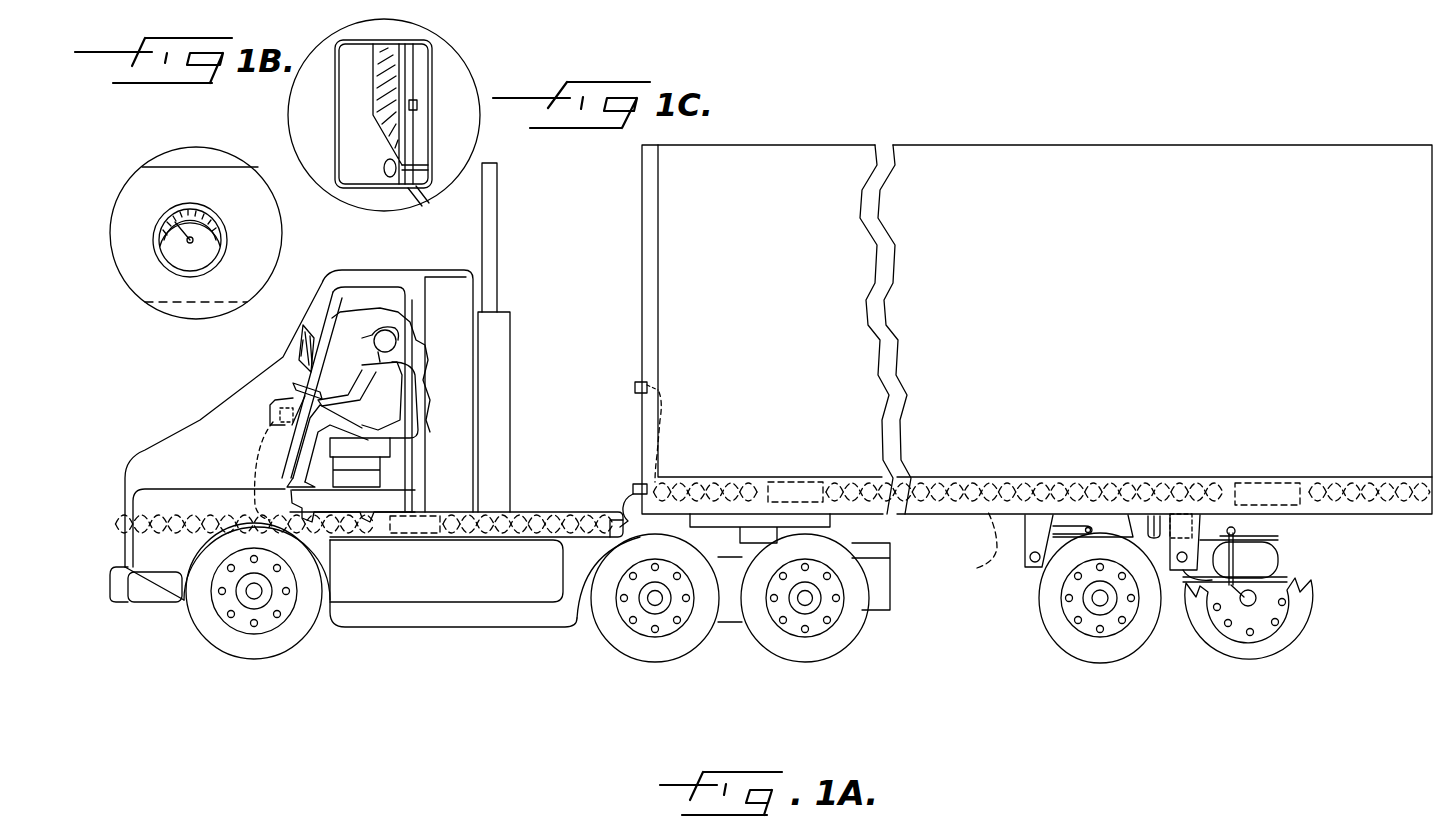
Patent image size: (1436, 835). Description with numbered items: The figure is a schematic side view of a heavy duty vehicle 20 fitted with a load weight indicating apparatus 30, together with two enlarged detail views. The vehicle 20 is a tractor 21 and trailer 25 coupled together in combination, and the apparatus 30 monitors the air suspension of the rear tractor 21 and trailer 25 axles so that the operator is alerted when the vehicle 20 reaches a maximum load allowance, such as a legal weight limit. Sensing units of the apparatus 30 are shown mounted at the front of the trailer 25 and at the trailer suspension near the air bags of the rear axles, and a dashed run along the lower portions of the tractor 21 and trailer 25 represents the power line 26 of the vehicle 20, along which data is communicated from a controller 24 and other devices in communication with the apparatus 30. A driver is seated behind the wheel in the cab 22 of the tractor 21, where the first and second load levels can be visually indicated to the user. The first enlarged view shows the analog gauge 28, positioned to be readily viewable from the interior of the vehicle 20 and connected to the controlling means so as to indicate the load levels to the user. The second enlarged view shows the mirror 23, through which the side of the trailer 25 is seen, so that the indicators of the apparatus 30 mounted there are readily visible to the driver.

In FIG. 1A, the heavy duty vehicle 20 is at (1273, 112).
In FIG. 1A, the tractor 21 is at (212, 484).
In FIG. 1A, the cab 22 is at (352, 369).
In FIG. 1A, the mirror 23 is at (305, 345).
In FIG. 1A, the controller 24 is at (437, 515).
In FIG. 1A, the trailer 25 is at (1230, 271).
In FIG. 1A, the power line 26 is at (962, 550).
In FIG. 1B, the analog gauge 28 is at (207, 206).
In FIG. 1A, the load weight indicating apparatus 30 is at (631, 370).
In FIG. 1C, the load weight indicating apparatus 30 is at (430, 103).